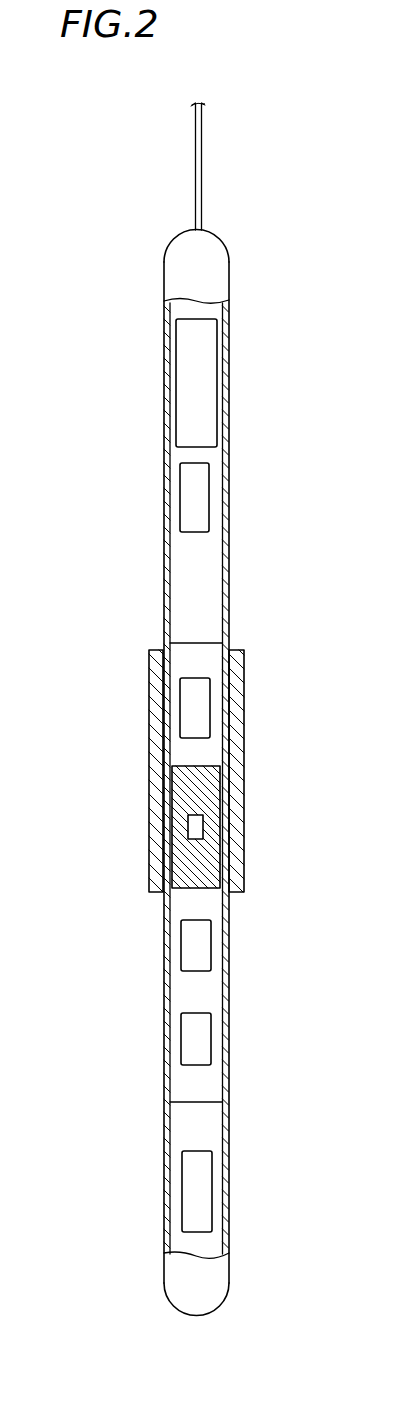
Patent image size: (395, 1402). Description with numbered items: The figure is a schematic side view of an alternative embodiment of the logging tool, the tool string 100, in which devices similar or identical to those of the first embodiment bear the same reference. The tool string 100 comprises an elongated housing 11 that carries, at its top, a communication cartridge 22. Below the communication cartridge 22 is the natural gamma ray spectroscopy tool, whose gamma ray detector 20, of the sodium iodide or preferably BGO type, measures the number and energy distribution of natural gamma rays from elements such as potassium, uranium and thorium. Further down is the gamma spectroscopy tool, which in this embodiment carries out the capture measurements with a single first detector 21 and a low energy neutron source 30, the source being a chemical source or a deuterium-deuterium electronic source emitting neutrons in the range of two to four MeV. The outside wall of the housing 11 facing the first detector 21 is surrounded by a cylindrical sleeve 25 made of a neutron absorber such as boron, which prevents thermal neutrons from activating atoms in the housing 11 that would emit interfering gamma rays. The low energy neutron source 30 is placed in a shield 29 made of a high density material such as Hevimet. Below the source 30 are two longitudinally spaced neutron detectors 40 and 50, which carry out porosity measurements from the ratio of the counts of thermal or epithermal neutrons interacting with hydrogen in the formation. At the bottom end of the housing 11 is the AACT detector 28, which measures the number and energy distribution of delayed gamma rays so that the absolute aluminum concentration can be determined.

The tool string 100 is at (187, 709).
The housing 11 is at (165, 312).
The communication cartridge 22 is at (190, 389).
The gamma ray detector 20 is at (195, 498).
The cylindrical sleeve 25 is at (245, 672).
The first detector 21 is at (190, 714).
The shield 29 is at (190, 790).
The low energy neutron source 30 is at (203, 823).
The neutron detector 40 is at (190, 945).
The neutron detector 50 is at (203, 1037).
The AACT detector 28 is at (190, 1183).